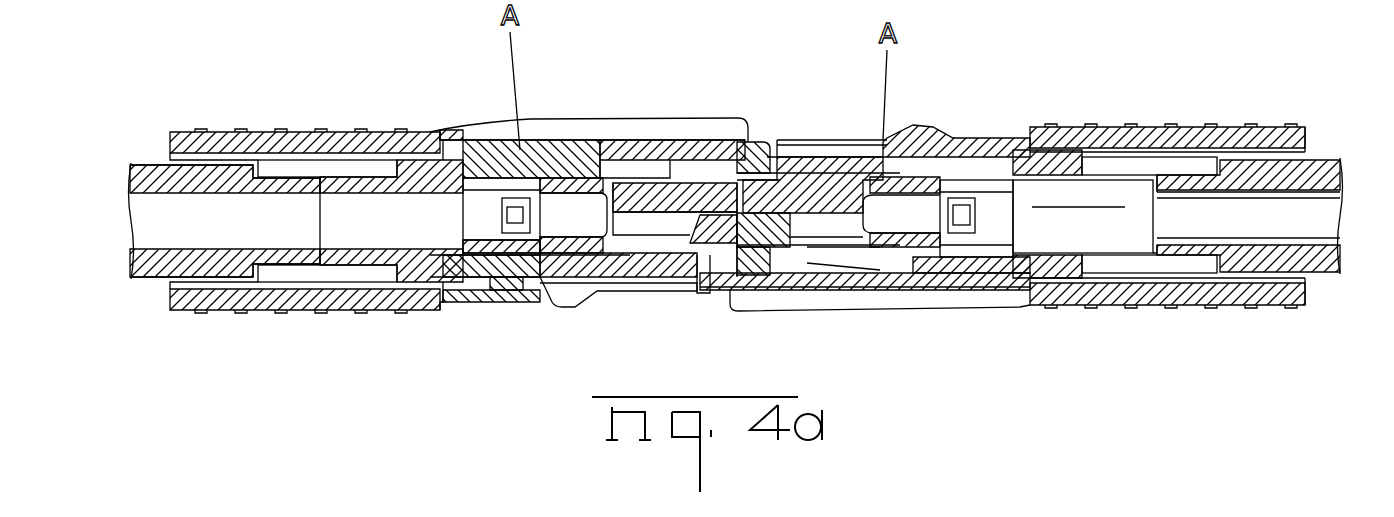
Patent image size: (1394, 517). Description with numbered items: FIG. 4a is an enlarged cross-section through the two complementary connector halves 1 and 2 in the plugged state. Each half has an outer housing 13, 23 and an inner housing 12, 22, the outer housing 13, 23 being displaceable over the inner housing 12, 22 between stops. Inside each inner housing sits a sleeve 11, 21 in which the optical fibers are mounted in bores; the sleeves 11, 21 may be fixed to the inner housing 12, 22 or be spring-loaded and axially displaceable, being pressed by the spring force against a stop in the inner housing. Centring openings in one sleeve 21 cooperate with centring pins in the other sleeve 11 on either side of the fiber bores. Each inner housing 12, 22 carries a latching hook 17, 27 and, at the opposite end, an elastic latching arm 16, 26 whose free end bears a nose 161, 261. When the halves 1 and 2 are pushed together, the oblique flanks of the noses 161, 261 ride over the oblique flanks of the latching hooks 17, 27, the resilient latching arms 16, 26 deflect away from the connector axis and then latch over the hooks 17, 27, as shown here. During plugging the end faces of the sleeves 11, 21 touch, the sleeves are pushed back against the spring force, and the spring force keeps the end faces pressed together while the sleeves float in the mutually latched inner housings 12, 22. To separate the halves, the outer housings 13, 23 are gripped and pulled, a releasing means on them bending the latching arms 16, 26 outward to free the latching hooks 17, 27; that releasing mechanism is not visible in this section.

The connector half 1 is at (405, 86).
The connector half 2 is at (970, 90).
The sleeve 11 is at (574, 155).
The inner housing 12 is at (484, 168).
The outer housing 13 is at (270, 131).
The latching arm 16 is at (640, 157).
The nose 161 is at (750, 152).
The latching hook 17 is at (787, 292).
The sleeve 21 is at (811, 186).
The inner housing 22 is at (953, 150).
The outer housing 23 is at (1148, 127).
The latching arm 26 is at (888, 291).
The nose 261 is at (717, 293).
The latching hook 27 is at (693, 160).